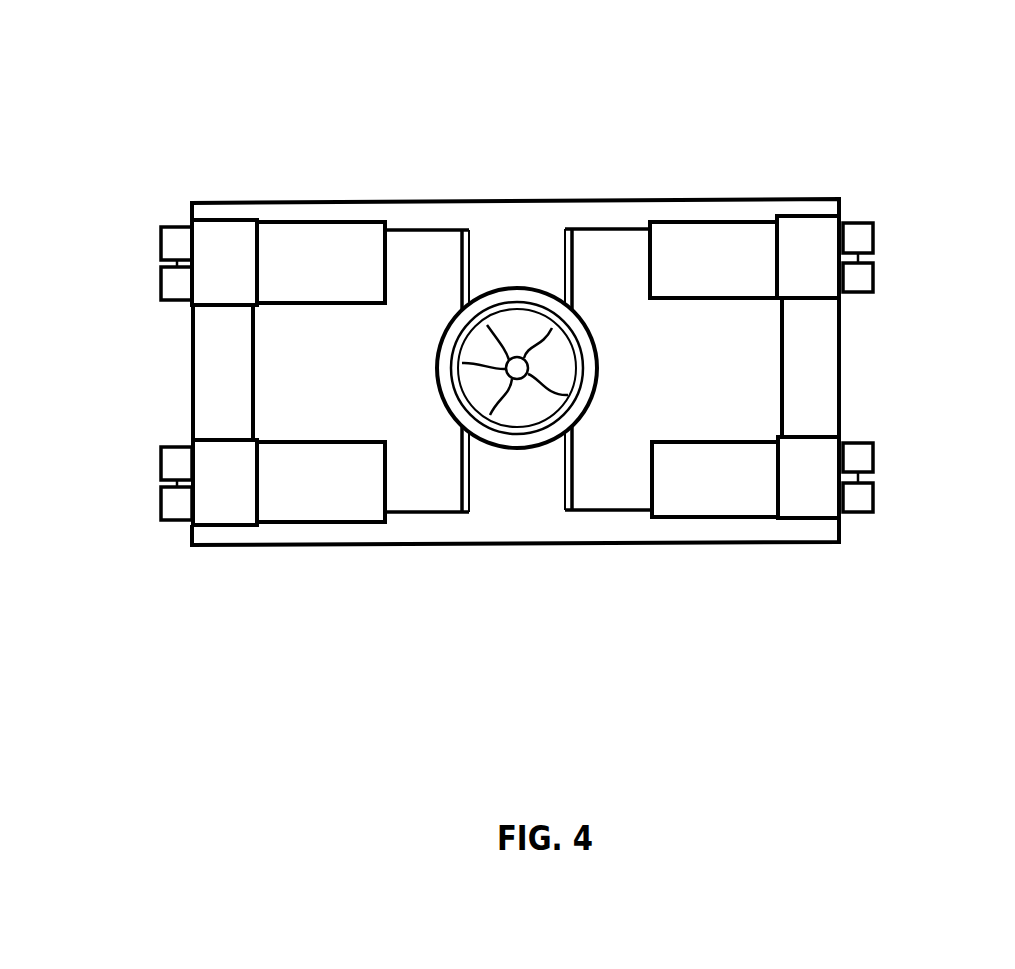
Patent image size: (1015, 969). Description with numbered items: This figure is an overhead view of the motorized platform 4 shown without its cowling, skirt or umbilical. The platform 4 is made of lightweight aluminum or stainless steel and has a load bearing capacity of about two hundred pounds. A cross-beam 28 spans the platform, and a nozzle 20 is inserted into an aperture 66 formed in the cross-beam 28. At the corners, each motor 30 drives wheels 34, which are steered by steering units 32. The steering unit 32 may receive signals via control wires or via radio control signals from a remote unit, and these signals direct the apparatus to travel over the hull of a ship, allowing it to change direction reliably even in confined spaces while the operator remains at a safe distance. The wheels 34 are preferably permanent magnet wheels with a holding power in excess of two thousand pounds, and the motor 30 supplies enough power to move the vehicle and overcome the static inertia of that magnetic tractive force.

The platform 4 is at (527, 202).
The nozzle 20 is at (522, 330).
The cross-beam 28 is at (536, 477).
The motor 30 is at (336, 233).
The steering unit 32 is at (229, 233).
The wheels 34 is at (160, 243).
The aperture 66 is at (503, 448).